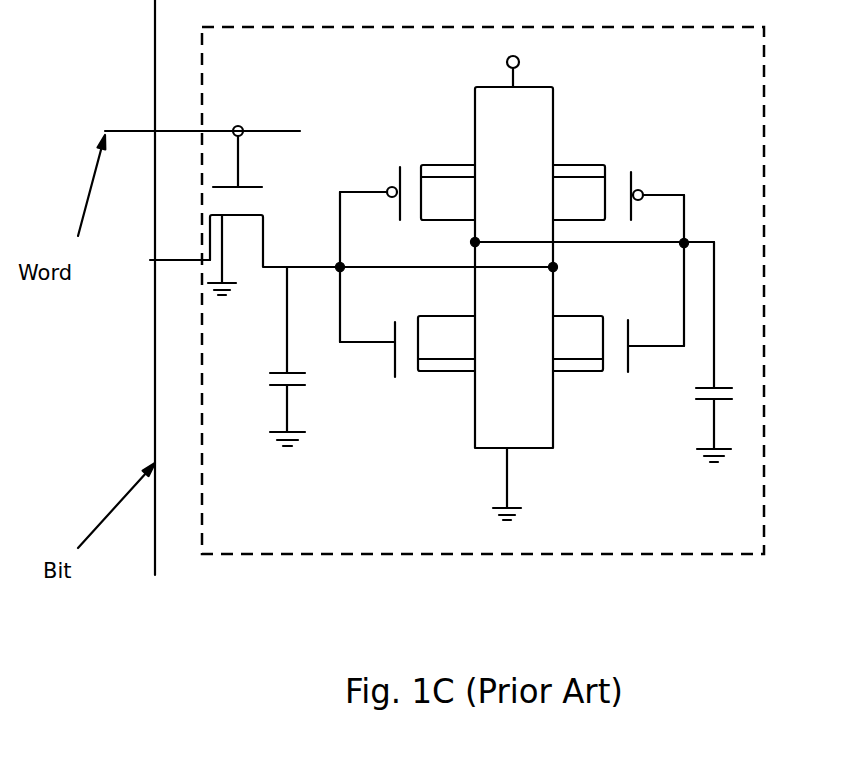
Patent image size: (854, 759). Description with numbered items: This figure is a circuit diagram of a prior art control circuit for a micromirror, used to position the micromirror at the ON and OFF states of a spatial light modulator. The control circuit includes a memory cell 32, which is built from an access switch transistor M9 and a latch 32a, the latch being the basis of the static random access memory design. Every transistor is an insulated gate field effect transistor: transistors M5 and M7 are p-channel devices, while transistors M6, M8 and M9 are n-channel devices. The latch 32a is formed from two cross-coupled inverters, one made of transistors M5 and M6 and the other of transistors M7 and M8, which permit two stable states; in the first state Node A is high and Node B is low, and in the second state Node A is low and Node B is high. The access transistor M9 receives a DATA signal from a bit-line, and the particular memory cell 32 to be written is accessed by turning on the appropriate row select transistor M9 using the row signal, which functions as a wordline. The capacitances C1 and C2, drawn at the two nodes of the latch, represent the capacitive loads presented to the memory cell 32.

The memory cell 32 is at (483, 290).
The latch 32a is at (436, 408).
The transistor M5 is at (448, 192).
The transistor M6 is at (446, 343).
The transistor M7 is at (579, 192).
The transistor M8 is at (578, 343).
The access switch transistor M9 is at (274, 255).
The capacitance C1 is at (273, 356).
The capacitance C2 is at (700, 352).